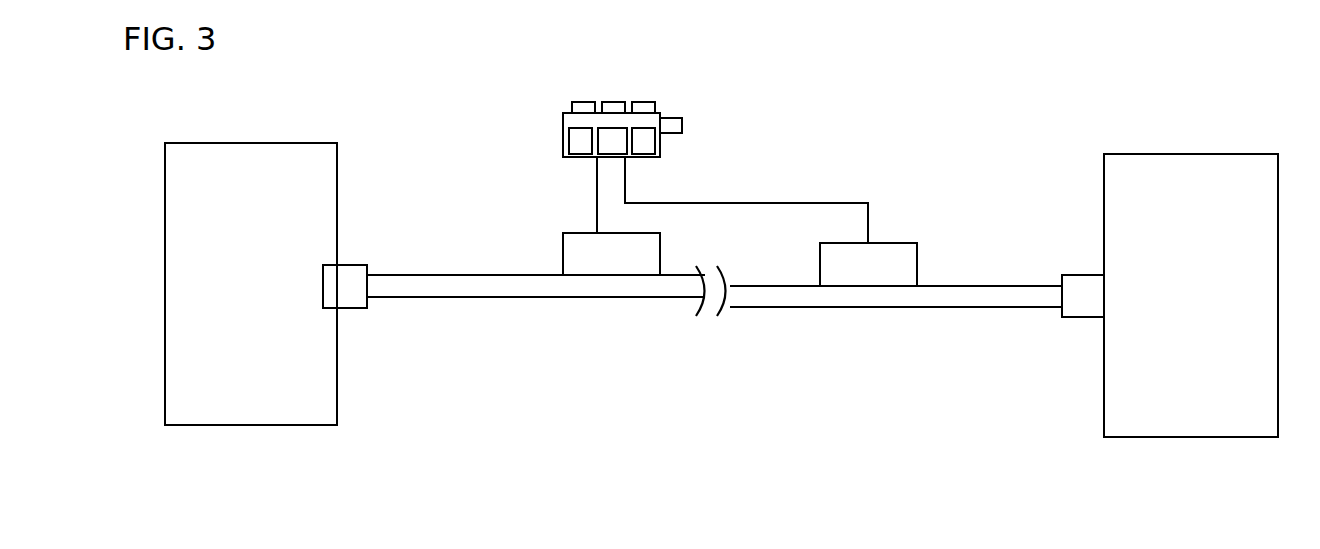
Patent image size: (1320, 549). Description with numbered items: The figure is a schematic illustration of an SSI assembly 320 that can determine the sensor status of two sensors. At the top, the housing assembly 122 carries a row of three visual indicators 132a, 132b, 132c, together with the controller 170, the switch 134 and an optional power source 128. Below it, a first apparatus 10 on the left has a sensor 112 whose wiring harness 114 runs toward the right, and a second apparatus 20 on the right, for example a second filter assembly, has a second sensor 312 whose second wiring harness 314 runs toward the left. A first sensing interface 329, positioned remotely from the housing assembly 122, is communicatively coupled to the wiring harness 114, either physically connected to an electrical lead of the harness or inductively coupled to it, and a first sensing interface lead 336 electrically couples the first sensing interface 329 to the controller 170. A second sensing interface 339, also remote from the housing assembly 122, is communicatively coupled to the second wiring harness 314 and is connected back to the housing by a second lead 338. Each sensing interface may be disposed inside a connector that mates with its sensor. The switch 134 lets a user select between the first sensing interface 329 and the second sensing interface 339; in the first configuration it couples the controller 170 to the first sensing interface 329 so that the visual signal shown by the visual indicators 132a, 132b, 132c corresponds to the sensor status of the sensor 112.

The apparatus 10 is at (238, 309).
The second apparatus 20 is at (1178, 321).
The sensor 112 is at (350, 302).
The second sensor 312 is at (1085, 307).
The wiring harness 114 is at (455, 292).
The second wiring harness 314 is at (915, 298).
The SSI assembly 320 is at (743, 77).
The housing assembly 122 is at (565, 118).
The visual indicator 132a is at (580, 103).
The visual indicator 132b is at (613, 108).
The visual indicator 132c is at (655, 108).
The switch 134 is at (677, 125).
The controller 170 is at (575, 147).
The power source 128 is at (648, 147).
The first sensing interface lead 336 is at (597, 203).
The connection line 338 is at (812, 203).
The first sensing interface 329 is at (573, 250).
The second sensing interface 339 is at (907, 260).